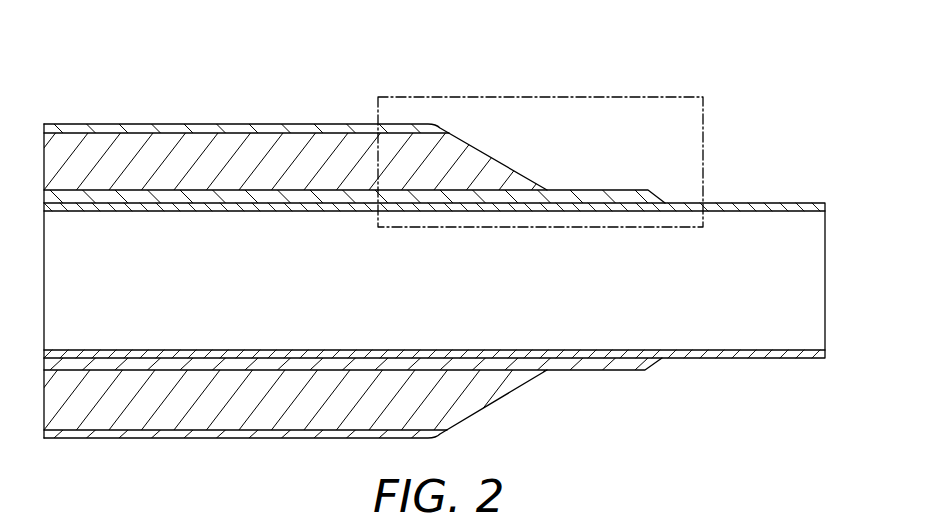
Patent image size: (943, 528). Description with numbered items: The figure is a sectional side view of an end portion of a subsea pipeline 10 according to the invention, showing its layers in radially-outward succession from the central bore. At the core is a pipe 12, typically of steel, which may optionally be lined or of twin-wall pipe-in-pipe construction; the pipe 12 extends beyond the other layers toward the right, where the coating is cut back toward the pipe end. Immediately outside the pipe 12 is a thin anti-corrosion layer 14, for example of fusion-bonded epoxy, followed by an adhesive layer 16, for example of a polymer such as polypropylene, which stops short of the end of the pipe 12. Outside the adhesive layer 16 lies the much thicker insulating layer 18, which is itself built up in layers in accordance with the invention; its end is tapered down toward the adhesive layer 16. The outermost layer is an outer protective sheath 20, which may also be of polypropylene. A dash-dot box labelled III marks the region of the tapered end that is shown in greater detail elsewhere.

The subsea pipeline 10 is at (782, 63).
The pipe 12 is at (796, 203).
The anti-corrosion layer 14 is at (684, 359).
The adhesive layer 16 is at (608, 371).
The insulating layer 18 is at (105, 143).
The outer protective sheath 20 is at (253, 124).
The detail region of FIG. 3 III is at (667, 97).